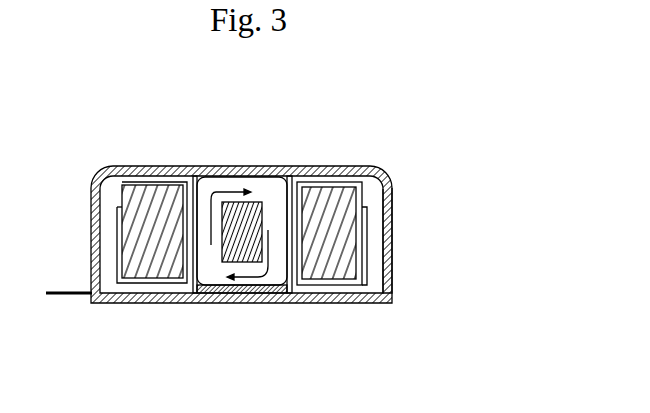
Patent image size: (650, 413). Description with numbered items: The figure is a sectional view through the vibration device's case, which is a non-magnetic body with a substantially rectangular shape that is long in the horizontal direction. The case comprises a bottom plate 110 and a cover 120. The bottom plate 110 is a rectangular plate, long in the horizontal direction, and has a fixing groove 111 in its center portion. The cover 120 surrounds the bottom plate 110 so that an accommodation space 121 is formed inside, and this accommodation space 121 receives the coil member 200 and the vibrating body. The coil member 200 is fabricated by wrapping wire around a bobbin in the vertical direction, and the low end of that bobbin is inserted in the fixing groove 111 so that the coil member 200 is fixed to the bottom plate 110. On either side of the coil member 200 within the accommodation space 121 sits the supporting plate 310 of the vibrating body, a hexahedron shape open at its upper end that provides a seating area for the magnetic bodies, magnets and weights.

The bottom plate 110 is at (391, 300).
The fixing groove 111 is at (190, 303).
The cover 120 is at (392, 240).
The accommodation space 121 is at (375, 198).
The coil member 200 is at (271, 191).
The supporting plate 310 is at (130, 283).